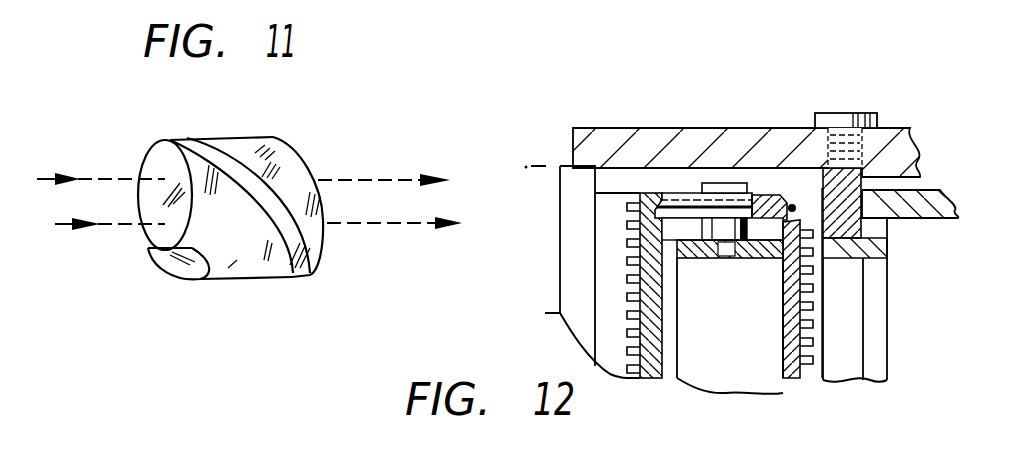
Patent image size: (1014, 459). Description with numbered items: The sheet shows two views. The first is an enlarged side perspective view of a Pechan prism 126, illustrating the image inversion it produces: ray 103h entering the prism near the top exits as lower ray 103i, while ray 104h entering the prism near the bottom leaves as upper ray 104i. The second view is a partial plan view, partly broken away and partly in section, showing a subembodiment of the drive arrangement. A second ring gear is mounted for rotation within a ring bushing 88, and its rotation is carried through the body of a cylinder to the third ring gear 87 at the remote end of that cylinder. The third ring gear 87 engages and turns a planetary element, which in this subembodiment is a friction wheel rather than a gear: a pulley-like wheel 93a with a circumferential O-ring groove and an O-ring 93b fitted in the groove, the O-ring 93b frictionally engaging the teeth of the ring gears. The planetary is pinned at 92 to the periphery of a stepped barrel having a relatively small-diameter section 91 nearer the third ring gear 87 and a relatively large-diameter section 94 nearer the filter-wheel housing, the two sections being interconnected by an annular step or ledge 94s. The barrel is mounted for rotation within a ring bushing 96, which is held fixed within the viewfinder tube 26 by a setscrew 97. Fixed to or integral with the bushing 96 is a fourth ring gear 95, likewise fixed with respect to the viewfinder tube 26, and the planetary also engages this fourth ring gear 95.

In FIG. 11, the prism 126 is at (236, 262).
In FIG. 11, the ray 103h is at (104, 178).
In FIG. 11, the ray 104h is at (107, 232).
In FIG. 11, the lower ray 103i is at (366, 227).
In FIG. 11, the upper ray 104i is at (358, 177).
In FIG. 12, the viewfinder tube 26 is at (887, 137).
In FIG. 12, the setscrew 97 is at (853, 127).
In FIG. 12, the ring bushing 88 is at (580, 268).
In FIG. 12, the third ring gear 87 is at (648, 376).
In FIG. 12, the pulley-like wheel 93a is at (692, 197).
In FIG. 12, the O-ring 93b is at (663, 197).
In FIG. 12, the pin 92 is at (733, 187).
In FIG. 12, the barrel section 91 is at (757, 263).
In FIG. 12, the barrel section 94 is at (920, 212).
In FIG. 12, the annular step 94s is at (828, 252).
In FIG. 12, the fourth ring gear 95 is at (785, 393).
In FIG. 12, the ring bushing 96 is at (838, 363).